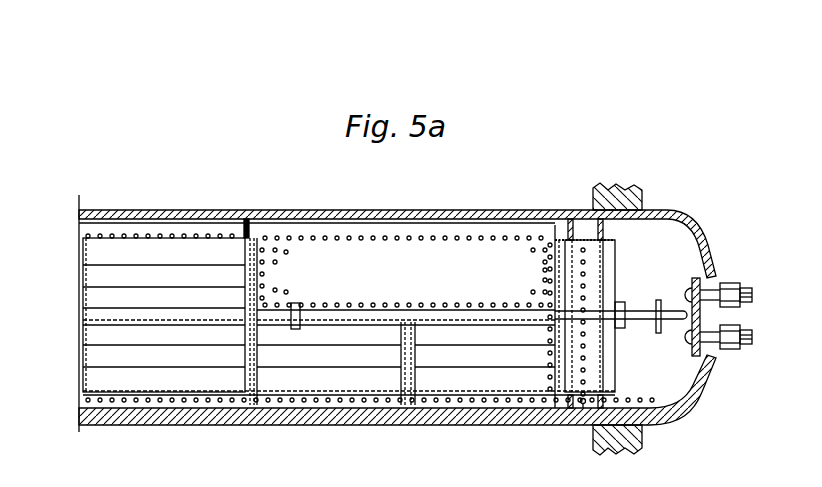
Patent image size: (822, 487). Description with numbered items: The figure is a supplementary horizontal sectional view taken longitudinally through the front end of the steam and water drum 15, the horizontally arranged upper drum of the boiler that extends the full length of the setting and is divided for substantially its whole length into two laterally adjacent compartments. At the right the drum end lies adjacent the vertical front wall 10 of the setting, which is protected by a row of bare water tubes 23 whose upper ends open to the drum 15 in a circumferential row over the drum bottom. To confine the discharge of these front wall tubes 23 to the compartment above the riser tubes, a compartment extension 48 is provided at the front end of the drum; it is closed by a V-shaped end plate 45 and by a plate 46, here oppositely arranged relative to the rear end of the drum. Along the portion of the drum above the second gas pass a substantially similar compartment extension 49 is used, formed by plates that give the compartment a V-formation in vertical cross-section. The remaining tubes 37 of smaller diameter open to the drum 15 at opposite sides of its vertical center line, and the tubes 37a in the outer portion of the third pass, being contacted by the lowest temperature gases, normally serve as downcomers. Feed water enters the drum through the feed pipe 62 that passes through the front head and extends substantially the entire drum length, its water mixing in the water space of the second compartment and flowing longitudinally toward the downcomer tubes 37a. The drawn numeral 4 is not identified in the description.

The partition post 4 is at (247, 227).
The front wall 10 is at (642, 193).
The steam and water drum 15 is at (383, 210).
The front wall water tubes 23 is at (583, 410).
The tubes 37 is at (212, 235).
The downcomer tubes 37a is at (431, 302).
The V-shaped end plate 45 is at (598, 230).
The plate 46 is at (567, 232).
The compartment extension 48 is at (615, 261).
The compartment extension 49 is at (264, 284).
The feed pipe 62 is at (343, 313).